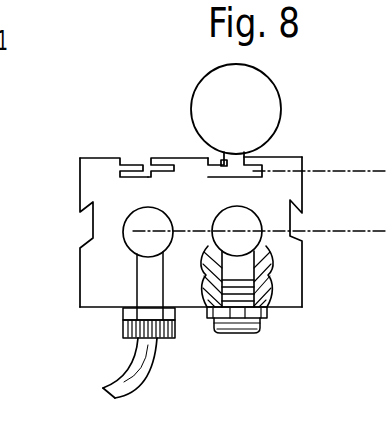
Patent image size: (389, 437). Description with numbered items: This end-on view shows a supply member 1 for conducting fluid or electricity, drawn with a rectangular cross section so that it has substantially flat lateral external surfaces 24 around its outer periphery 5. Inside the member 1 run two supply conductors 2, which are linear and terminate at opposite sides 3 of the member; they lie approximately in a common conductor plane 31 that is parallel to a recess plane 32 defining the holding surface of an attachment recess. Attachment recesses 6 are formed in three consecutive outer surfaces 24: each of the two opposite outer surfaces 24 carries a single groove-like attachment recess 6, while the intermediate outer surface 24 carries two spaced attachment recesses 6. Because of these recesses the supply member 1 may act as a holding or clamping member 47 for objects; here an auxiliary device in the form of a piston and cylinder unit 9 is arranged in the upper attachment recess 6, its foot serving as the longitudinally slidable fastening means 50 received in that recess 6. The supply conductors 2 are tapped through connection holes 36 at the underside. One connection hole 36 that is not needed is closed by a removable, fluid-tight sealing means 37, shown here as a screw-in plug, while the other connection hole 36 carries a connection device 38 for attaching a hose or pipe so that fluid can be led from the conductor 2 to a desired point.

The supply member 1 is at (80, 177).
The supply conductor 2 is at (218, 220).
The side of the member 3 is at (112, 198).
The outer periphery 5 is at (76, 287).
The attachment recess 6 is at (147, 170).
The piston and cylinder unit 9 is at (268, 104).
The lateral external surface 24 is at (0, 145).
The conductor plane 31 is at (336, 232).
The recess plane 32 is at (362, 171).
The connection hole 36 is at (136, 281).
The sealing means 37 is at (208, 318).
The connection device 38 is at (161, 342).
The holding or clamping member 47 is at (97, 167).
The fastening means 50 is at (225, 156).